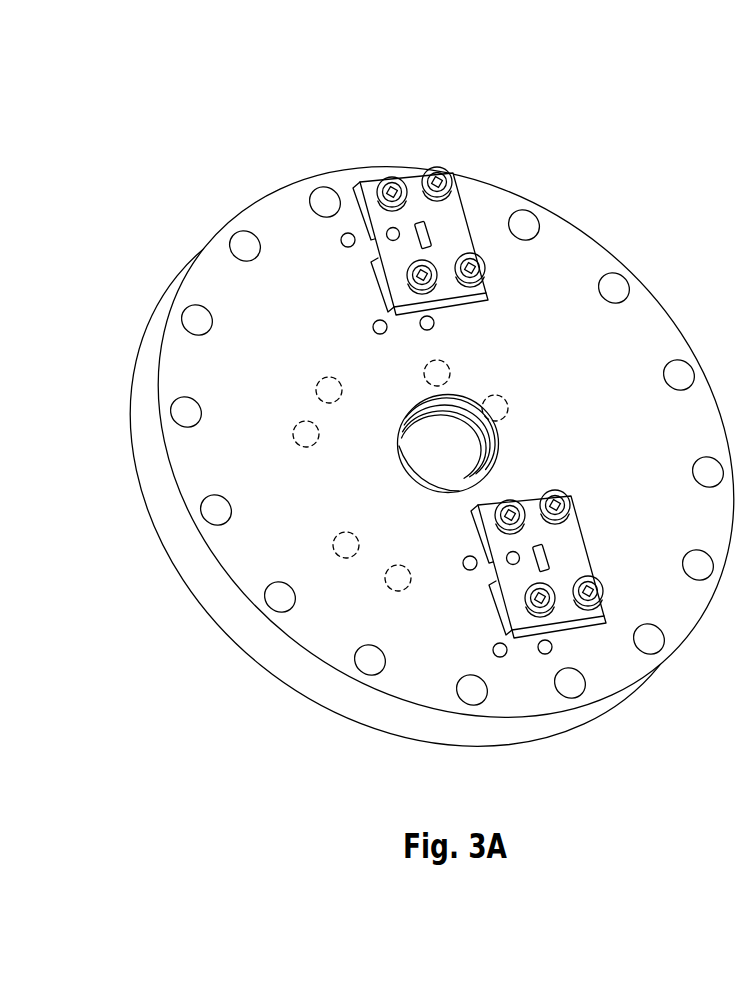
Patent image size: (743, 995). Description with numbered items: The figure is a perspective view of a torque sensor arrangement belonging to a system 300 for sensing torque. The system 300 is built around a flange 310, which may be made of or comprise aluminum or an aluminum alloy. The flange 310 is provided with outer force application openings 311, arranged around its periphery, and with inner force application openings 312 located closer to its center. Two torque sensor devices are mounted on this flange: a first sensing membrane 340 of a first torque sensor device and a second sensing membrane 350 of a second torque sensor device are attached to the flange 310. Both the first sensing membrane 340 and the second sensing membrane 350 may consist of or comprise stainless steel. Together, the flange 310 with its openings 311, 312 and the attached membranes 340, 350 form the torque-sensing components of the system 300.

The system for sensing torque 300 is at (214, 103).
The flange 310 is at (432, 672).
The outer force application openings 311 is at (628, 280).
The inner force application openings 312 is at (352, 222).
The first sensing membrane 340 is at (474, 218).
The second sensing membrane 350 is at (585, 541).